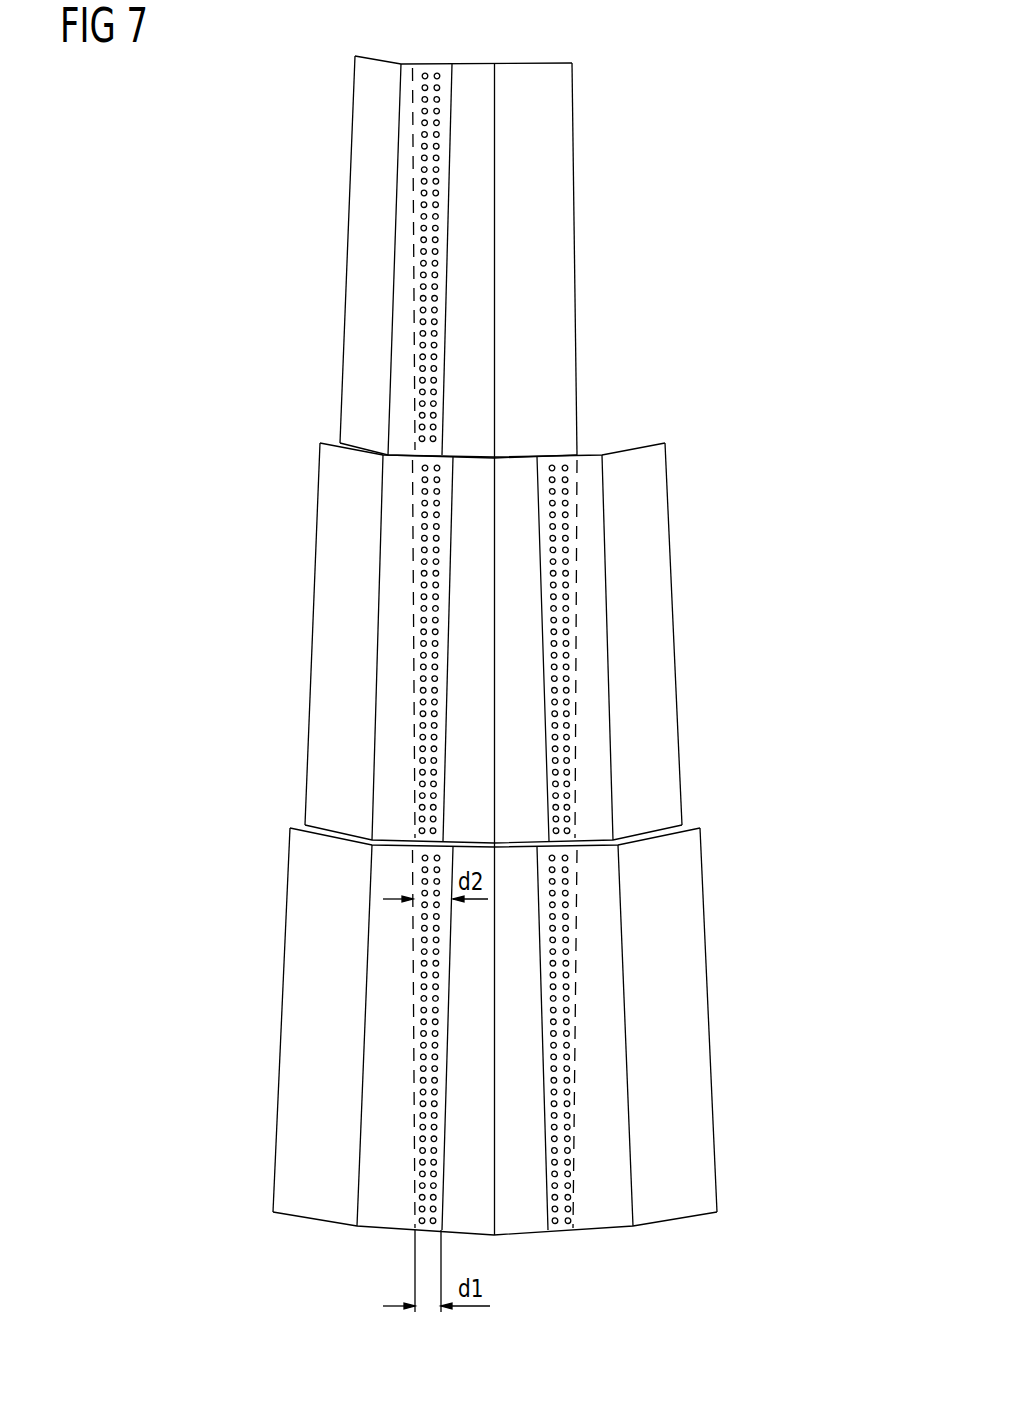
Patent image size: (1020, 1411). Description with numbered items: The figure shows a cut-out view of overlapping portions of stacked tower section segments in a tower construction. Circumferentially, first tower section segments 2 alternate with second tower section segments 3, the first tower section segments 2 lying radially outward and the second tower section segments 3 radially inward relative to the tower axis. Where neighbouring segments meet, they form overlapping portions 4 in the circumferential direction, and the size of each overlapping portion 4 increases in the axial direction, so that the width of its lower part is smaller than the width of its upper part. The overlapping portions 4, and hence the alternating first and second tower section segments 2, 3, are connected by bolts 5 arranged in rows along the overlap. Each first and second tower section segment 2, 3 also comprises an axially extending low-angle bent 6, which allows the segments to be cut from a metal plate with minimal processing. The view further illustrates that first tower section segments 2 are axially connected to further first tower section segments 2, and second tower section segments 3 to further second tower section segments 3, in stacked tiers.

The first tower section segment 2 is at (507, 468).
The second tower section segment 3 is at (357, 130).
The overlapping portion 4 is at (443, 97).
The bolt 5 is at (418, 243).
The low-angle bent 6 is at (496, 255).